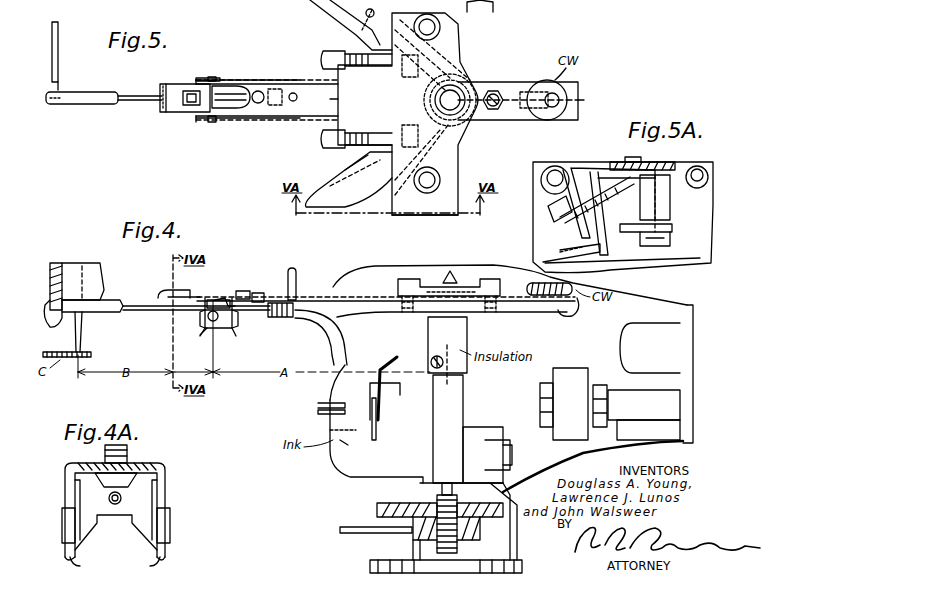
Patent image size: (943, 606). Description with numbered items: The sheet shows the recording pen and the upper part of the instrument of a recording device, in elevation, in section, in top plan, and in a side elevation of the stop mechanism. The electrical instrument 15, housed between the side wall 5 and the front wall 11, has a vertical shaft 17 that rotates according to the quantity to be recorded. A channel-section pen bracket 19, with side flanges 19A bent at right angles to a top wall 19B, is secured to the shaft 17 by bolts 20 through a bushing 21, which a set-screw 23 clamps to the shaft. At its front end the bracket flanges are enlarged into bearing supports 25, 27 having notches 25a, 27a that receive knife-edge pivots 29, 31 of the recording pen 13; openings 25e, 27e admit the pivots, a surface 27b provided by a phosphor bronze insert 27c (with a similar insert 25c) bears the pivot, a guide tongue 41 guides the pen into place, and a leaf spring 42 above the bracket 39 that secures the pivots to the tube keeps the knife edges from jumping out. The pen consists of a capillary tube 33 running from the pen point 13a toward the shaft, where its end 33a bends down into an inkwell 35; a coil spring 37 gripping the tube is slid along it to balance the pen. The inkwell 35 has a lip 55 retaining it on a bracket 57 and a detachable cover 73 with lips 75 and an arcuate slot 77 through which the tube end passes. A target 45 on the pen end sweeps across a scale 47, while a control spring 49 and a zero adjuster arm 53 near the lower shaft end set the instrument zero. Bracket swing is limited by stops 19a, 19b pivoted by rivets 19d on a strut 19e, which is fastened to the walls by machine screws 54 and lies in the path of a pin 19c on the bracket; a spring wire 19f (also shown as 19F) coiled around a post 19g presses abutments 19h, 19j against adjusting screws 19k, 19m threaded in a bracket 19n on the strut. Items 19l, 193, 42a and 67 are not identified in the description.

In FIG. 5A, the side wall 5 is at (715, 232).
In FIG. 4, the front wall 11 is at (352, 470).
In FIG. 5, the recording pen 13 is at (62, 104).
In FIG. 4, the recording pen 13 is at (118, 314).
In FIG. 4, the pen point 13a is at (74, 344).
In FIG. 4, the electrical instrument 15 is at (505, 432).
In FIG. 4, the vertical shaft 17 is at (468, 382).
In FIG. 5, the pen bracket 19 is at (310, 121).
In FIG. 4, the pen bracket 19 is at (372, 313).
In FIG. 5, the stop 19a is at (310, 12).
In FIG. 5, the side flanges 19A is at (500, 83).
In FIG. 4, the side flanges 19A is at (575, 315).
In FIG. 4A, the side flanges 19A is at (65, 472).
In FIG. 5, the stop 19b is at (330, 186).
In FIG. 5A, the stop 19b is at (605, 270).
In FIG. 5, the top wall 19B is at (594, 100).
In FIG. 4, the top wall 19B is at (538, 286).
In FIG. 4A, the top wall 19B is at (142, 463).
In FIG. 5, the pin 19c is at (300, 90).
In FIG. 4, the pin 19c is at (288, 272).
In FIG. 5, the rivets 19d is at (440, 30).
In FIG. 5A, the rivets 19d is at (634, 157).
In FIG. 5, the strut 19e is at (448, 214).
In FIG. 5A, the strut 19e is at (674, 153).
In FIG. 5, the spring wire 19f is at (463, 61).
In FIG. 5, the spring wire 19F is at (360, 206).
In FIG. 5A, the spring wire 19F is at (578, 244).
In FIG. 5, the post 19g is at (430, 103).
In FIG. 5A, the post 19g is at (668, 246).
In FIG. 5, the abutment 19h is at (400, 70).
In FIG. 5, the abutment 19j is at (402, 134).
In FIG. 5A, the abutment 19j is at (620, 205).
In FIG. 5, the adjusting screw 19k is at (325, 58).
In FIG. 5A, the strip 19l is at (625, 238).
In FIG. 5, the adjusting screw 19m is at (332, 146).
In FIG. 5A, the adjusting screw 19m is at (560, 220).
In FIG. 5, the bracket 19n is at (332, 99).
In FIG. 5A, the bracket 19n is at (583, 165).
In FIG. 5, the bracket 193 is at (480, 8).
In FIG. 5, the bolts 20 is at (491, 111).
In FIG. 4, the bolts 20 is at (408, 278).
In FIG. 4, the bushing 21 is at (469, 338).
In FIG. 4, the set-screw 23 is at (431, 359).
In FIG. 5, the bearing support 25 is at (236, 80).
In FIG. 4A, the bearing support 25 is at (60, 544).
In FIG. 5, the notch 25a is at (198, 80).
In FIG. 5, the insert 25c is at (222, 78).
In FIG. 4A, the insert 25c is at (80, 566).
In FIG. 4A, the opening 25e is at (65, 497).
In FIG. 5, the bearing support 27 is at (240, 122).
In FIG. 4, the bearing support 27 is at (234, 334).
In FIG. 4A, the bearing support 27 is at (168, 544).
In FIG. 4, the notch 27a is at (236, 320).
In FIG. 4, the surface 27b is at (204, 316).
In FIG. 5, the insert 27c is at (198, 122).
In FIG. 4, the insert 27c is at (203, 337).
In FIG. 4A, the insert 27c is at (152, 566).
In FIG. 4, the opening 27e is at (200, 296).
In FIG. 4A, the opening 27e is at (165, 497).
In FIG. 5, the knife-edge pivot 29 is at (213, 78).
In FIG. 4A, the knife-edge pivot 29 is at (62, 516).
In FIG. 5, the knife-edge pivot 31 is at (213, 123).
In FIG. 4A, the knife-edge pivot 31 is at (170, 516).
In FIG. 5, the capillary tube 33 is at (137, 102).
In FIG. 4, the capillary tube 33 is at (333, 348).
In FIG. 4A, the capillary tube 33 is at (109, 498).
In FIG. 4, the tube end 33a is at (328, 431).
In FIG. 4, the inkwell 35 is at (338, 455).
In FIG. 4, the coil spring 37 is at (290, 317).
In FIG. 5, the bracket 39 is at (212, 104).
In FIG. 4, the bracket 39 is at (225, 298).
In FIG. 4A, the bracket 39 is at (135, 530).
In FIG. 5, the guide tongue 41 is at (158, 88).
In FIG. 4, the guide tongue 41 is at (162, 292).
In FIG. 5, the leaf spring 42 is at (190, 90).
In FIG. 4, the leaf spring 42 is at (241, 290).
In FIG. 4A, the leaf spring 42 is at (105, 452).
In FIG. 5, the stop pin 42a is at (262, 93).
In FIG. 4, the stop pin 42a is at (260, 293).
In FIG. 5, the target 45 is at (60, 92).
In FIG. 4, the target 45 is at (48, 304).
In FIG. 5, the scale 47 is at (52, 74).
In FIG. 4, the scale 47 is at (50, 274).
In FIG. 4, the control spring 49 is at (370, 566).
In FIG. 4, the zero adjuster arm 53 is at (350, 534).
In FIG. 5A, the machine screws 54 is at (704, 168).
In FIG. 4, the lip 55 is at (378, 403).
In FIG. 4, the bracket 57 is at (366, 435).
In FIG. 4, the arm 67 is at (95, 272).
In FIG. 4, the cover 73 is at (318, 412).
In FIG. 4, the lips 75 is at (378, 375).
In FIG. 4, the arcuate slot 77 is at (320, 404).